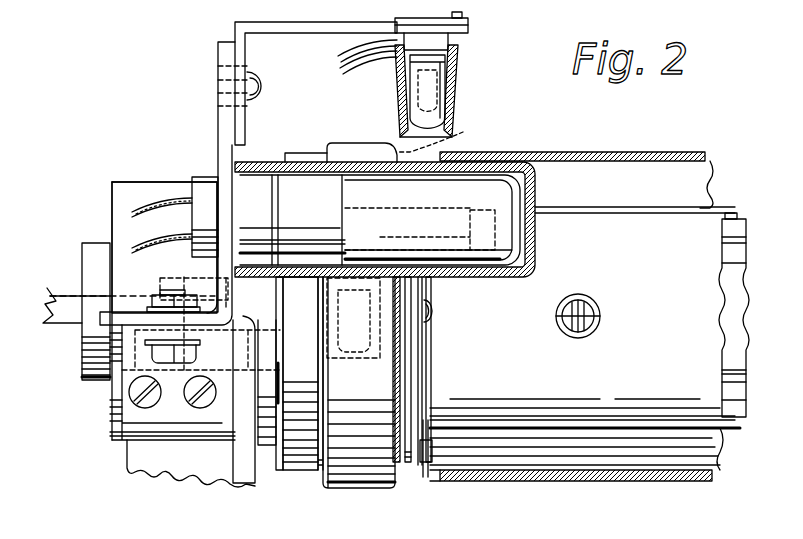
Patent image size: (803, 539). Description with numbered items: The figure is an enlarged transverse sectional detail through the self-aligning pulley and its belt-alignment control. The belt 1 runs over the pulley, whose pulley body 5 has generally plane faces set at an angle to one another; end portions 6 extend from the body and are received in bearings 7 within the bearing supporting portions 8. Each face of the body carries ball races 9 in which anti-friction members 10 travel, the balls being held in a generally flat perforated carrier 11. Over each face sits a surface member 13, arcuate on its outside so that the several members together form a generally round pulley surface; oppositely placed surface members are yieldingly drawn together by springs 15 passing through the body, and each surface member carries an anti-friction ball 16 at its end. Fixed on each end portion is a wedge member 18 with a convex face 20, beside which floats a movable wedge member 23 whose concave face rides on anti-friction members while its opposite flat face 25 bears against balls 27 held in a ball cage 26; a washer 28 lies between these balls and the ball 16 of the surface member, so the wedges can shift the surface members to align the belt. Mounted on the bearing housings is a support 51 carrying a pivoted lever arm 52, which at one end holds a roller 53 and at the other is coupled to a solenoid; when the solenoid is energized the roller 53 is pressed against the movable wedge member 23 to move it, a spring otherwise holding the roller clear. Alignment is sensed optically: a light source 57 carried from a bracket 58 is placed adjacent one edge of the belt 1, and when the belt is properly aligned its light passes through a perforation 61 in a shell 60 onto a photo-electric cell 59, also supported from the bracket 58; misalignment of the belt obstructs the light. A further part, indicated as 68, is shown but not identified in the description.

The belt 1 is at (558, 153).
The pulley body 5 is at (740, 295).
The end portions 6 is at (82, 355).
The bearings 7 is at (278, 450).
The bearing supporting portions 8 is at (115, 402).
The ball races 9 is at (733, 253).
The anti-friction members 10 is at (508, 420).
The carrier 11 is at (731, 215).
The surface members 13 is at (697, 185).
The springs 15 is at (596, 308).
The ball 16 is at (430, 313).
The wedge member 18 is at (300, 473).
The convex face 20 is at (323, 467).
The movable wedge member 23 is at (347, 488).
The flat face 25 is at (400, 477).
The ball cage 26 is at (403, 350).
The balls 27 is at (392, 418).
The washer 28 is at (417, 380).
The support 51 is at (130, 368).
The lever arm 52 is at (116, 260).
The roller 53 is at (375, 362).
The light source 57 is at (437, 82).
The bracket 58 is at (226, 125).
The photo-electric cell 59 is at (500, 228).
The shell 60 is at (533, 252).
The perforation 61 is at (403, 152).
The connection 68 is at (531, 533).